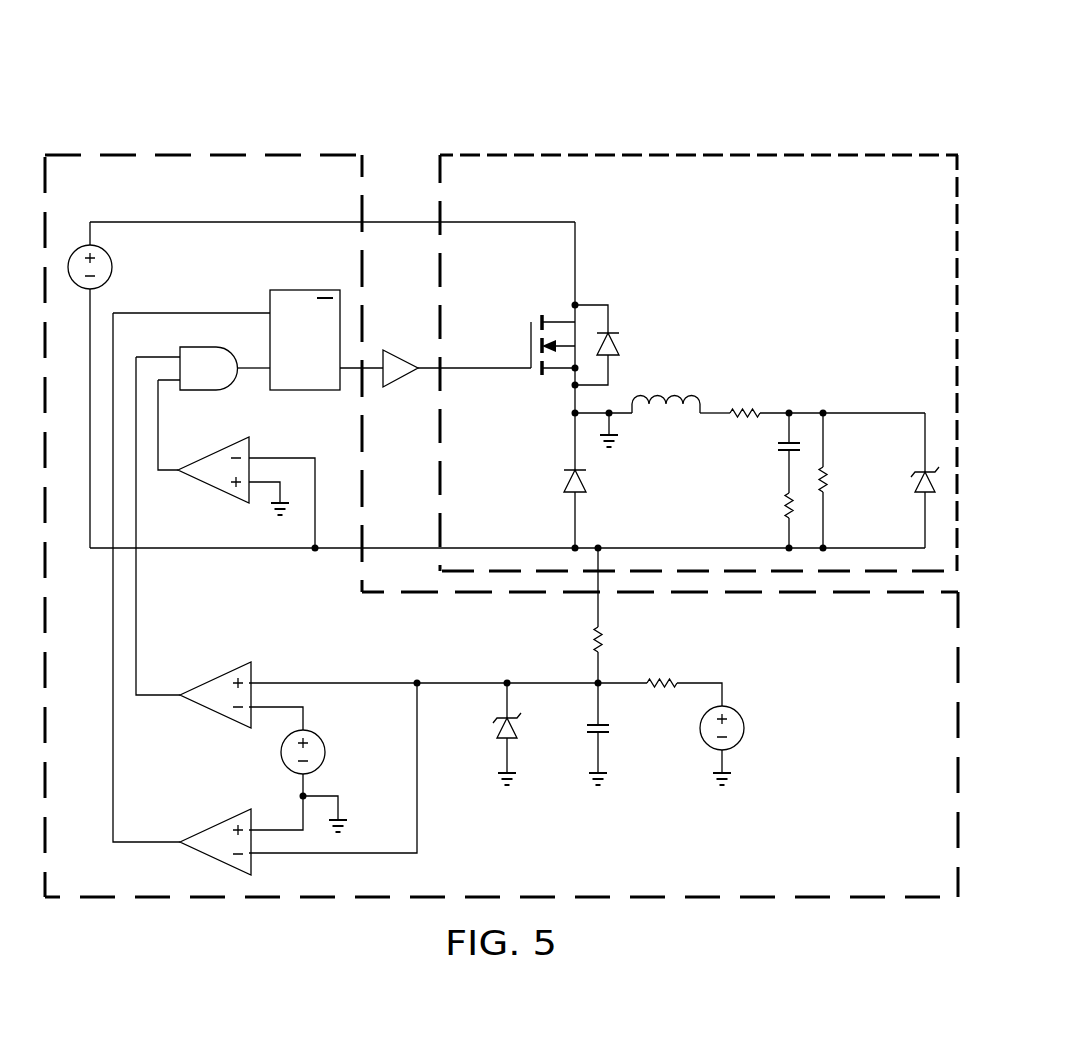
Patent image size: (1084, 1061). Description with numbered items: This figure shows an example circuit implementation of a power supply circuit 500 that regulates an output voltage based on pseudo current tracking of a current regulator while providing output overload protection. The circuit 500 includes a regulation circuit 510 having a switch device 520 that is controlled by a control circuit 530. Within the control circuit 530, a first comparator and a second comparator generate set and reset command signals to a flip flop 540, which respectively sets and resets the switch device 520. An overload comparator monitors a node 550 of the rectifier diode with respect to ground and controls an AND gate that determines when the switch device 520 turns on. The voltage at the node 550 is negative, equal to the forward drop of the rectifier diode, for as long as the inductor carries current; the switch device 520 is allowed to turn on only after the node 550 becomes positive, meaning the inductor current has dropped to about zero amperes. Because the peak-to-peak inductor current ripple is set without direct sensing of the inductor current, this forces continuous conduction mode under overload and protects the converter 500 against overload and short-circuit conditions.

The power supply circuit 500 is at (326, 64).
The regulation circuit 510 is at (744, 142).
The switch device 520 is at (528, 334).
The control circuit 530 is at (173, 142).
The flip flop 540 is at (297, 290).
The node 550 is at (684, 546).